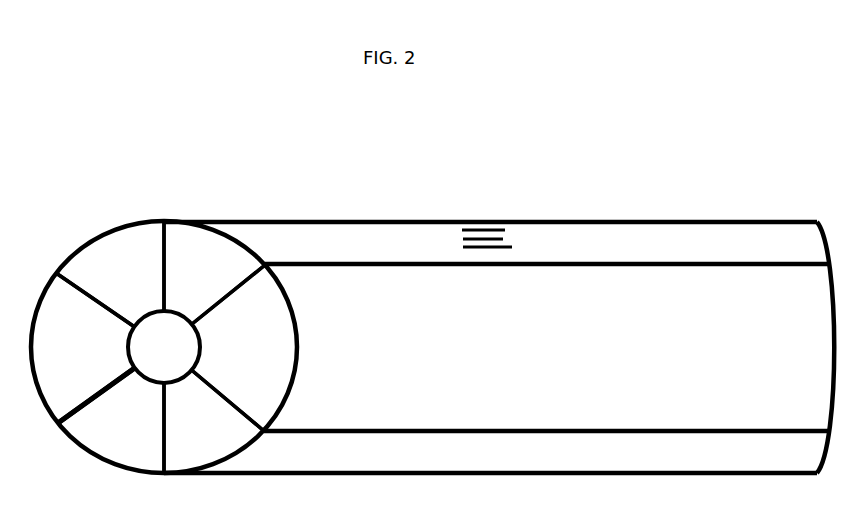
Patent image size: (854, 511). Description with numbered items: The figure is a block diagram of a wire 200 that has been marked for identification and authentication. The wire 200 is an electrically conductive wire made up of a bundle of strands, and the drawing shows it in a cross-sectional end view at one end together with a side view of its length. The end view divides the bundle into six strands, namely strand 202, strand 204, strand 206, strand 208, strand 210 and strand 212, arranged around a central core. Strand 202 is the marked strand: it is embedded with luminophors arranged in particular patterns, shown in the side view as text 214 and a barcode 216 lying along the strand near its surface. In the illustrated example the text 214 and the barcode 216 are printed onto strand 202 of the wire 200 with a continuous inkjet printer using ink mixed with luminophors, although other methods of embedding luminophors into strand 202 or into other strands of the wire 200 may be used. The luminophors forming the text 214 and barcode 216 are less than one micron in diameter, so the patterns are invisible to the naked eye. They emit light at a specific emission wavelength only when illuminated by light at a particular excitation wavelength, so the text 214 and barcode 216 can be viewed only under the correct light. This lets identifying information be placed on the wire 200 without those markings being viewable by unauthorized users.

The wire 200 is at (432, 286).
The strand 202 is at (214, 273).
The strand 204 is at (229, 348).
The strand 206 is at (214, 421).
The strand 208 is at (111, 420).
The strand 210 is at (89, 348).
The strand 212 is at (110, 274).
The text 214 is at (377, 232).
The barcode 216 is at (487, 223).